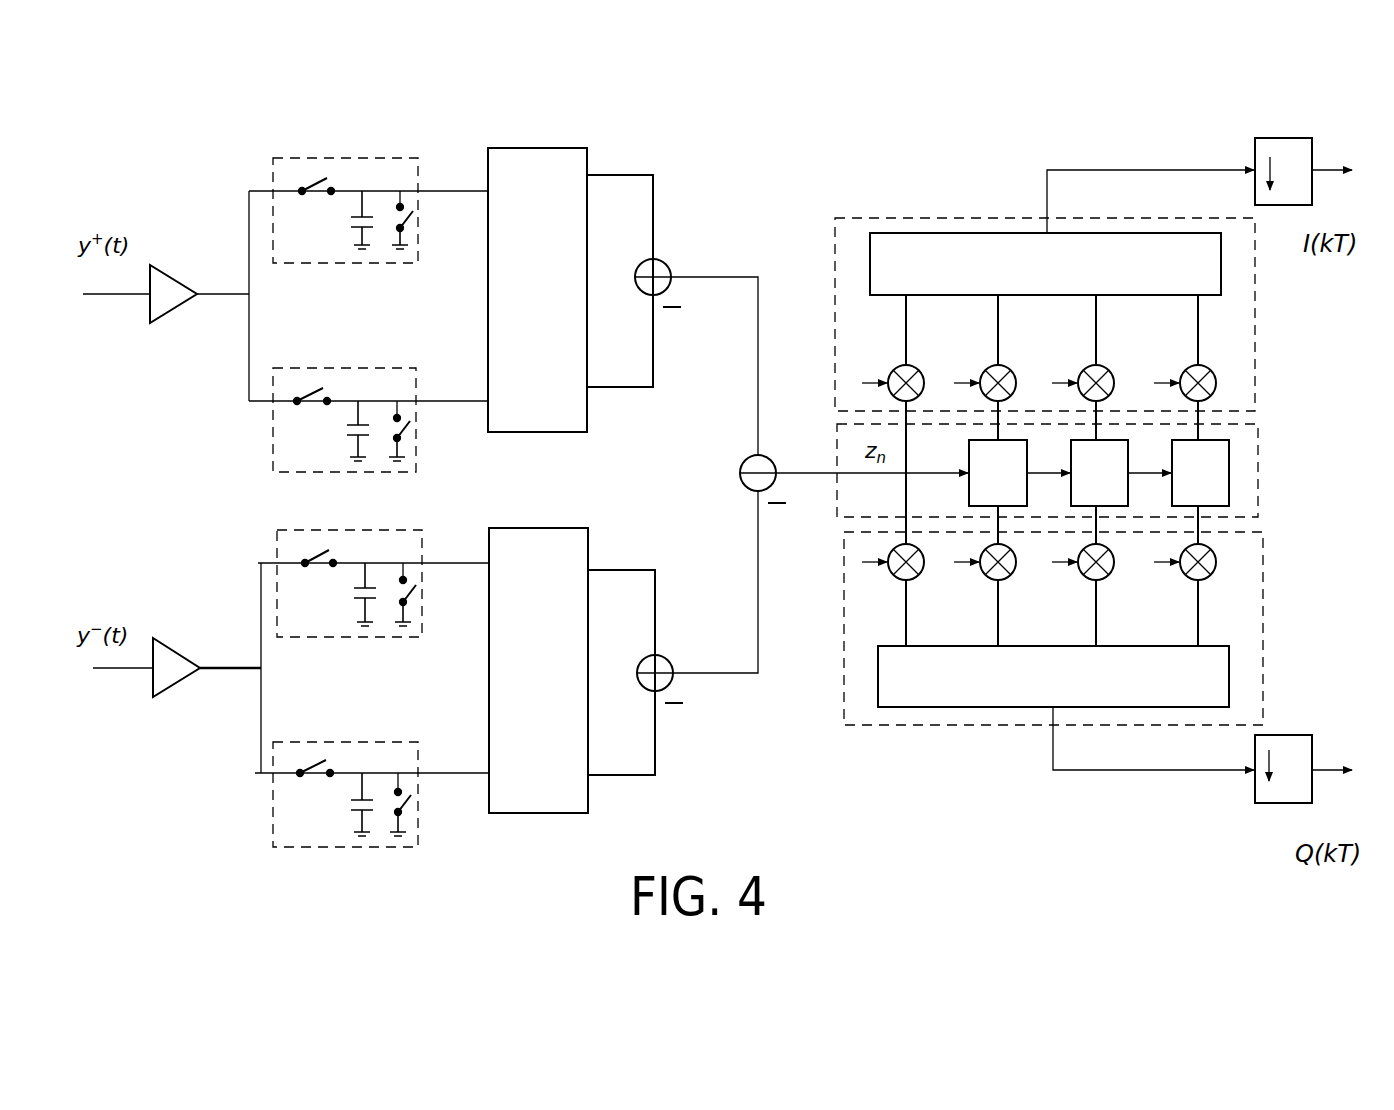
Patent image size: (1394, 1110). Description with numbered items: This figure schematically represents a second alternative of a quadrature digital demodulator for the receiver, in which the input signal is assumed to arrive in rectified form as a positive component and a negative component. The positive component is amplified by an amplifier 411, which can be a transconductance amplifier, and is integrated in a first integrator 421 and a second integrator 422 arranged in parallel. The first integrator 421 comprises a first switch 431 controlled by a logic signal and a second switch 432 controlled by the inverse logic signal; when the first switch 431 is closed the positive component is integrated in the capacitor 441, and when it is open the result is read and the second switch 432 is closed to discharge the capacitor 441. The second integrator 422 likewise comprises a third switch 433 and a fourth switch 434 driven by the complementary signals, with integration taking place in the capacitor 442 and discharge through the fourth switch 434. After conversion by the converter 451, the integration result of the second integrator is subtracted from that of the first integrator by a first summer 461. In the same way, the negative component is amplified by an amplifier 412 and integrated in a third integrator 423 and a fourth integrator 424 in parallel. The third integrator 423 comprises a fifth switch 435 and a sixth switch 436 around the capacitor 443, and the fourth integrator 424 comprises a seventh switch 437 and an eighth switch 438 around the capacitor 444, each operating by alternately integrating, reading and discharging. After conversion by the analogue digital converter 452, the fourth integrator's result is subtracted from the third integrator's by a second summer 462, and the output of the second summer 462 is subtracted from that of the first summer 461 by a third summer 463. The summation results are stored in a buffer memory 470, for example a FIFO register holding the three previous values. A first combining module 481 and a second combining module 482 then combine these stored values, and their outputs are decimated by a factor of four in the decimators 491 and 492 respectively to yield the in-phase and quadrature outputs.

The amplifier 411 is at (175, 265).
The amplifier 412 is at (176, 655).
The first integrator 421 is at (273, 160).
The second integrator 422 is at (273, 432).
The third integrator 423 is at (277, 533).
The fourth integrator 424 is at (273, 808).
The first switch 431 is at (327, 178).
The second switch 432 is at (414, 212).
The third switch 433 is at (323, 388).
The fourth switch 434 is at (411, 421).
The fifth switch 435 is at (329, 550).
The sixth switch 436 is at (417, 585).
The seventh switch 437 is at (326, 760).
The eighth switch 438 is at (412, 795).
The capacitor 441 is at (372, 215).
The capacitor 442 is at (368, 425).
The capacitor 443 is at (372, 588).
The capacitor 444 is at (367, 800).
The converter 451 is at (587, 432).
The analogue digital converter 452 is at (588, 813).
The first summer 461 is at (657, 258).
The second summer 462 is at (667, 648).
The third summer 463 is at (762, 456).
The buffer memory 470 is at (1258, 450).
The first combining module 481 is at (883, 217).
The second combining module 482 is at (892, 725).
The decimator 491 is at (1255, 152).
The decimator 492 is at (1255, 783).